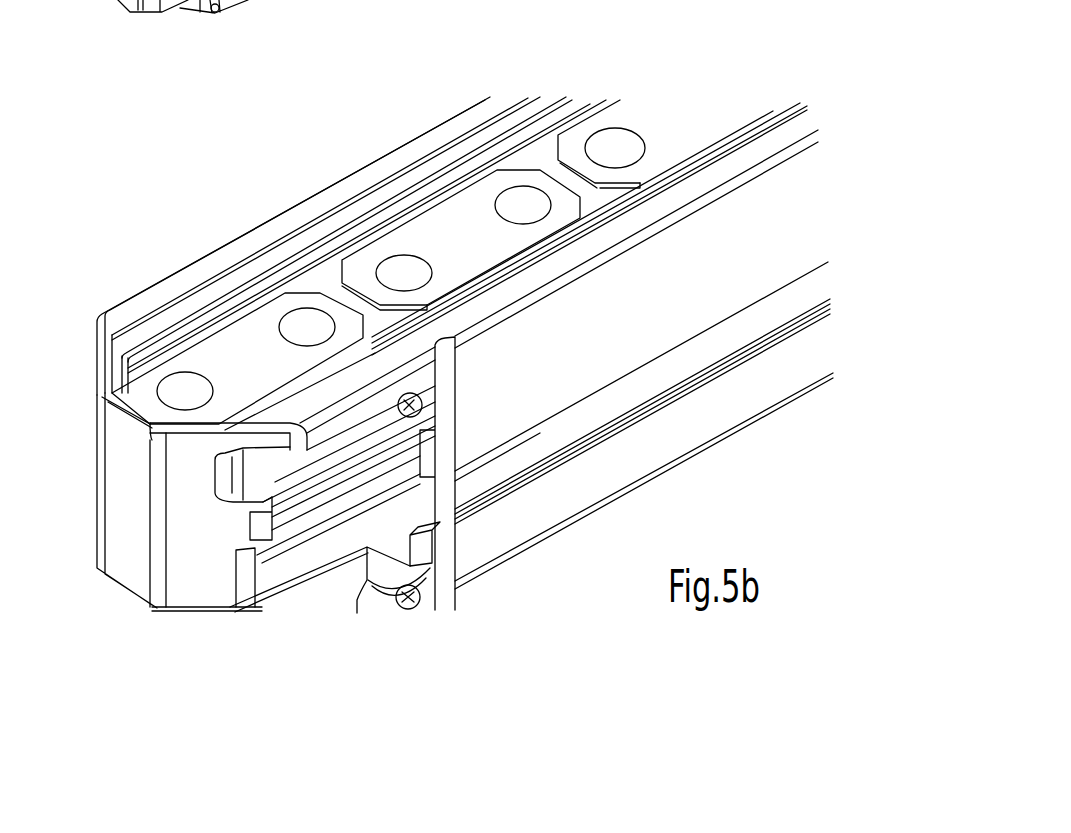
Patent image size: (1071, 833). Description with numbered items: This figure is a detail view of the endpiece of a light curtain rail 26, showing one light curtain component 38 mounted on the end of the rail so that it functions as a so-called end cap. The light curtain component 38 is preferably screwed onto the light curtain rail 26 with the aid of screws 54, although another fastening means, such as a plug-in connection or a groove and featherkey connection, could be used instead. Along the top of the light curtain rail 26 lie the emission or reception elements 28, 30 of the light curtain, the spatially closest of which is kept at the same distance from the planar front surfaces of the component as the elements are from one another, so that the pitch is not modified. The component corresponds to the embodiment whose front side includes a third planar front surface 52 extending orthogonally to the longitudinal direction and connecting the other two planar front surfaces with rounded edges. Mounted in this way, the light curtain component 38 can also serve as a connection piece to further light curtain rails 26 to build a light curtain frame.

The light curtain rail 26 is at (611, 297).
The emission element 28 is at (190, 380).
The reception element 30 is at (307, 322).
The light curtain component 38 is at (125, 302).
The third planar front surface 52 is at (117, 521).
The screws 54 is at (460, 387).